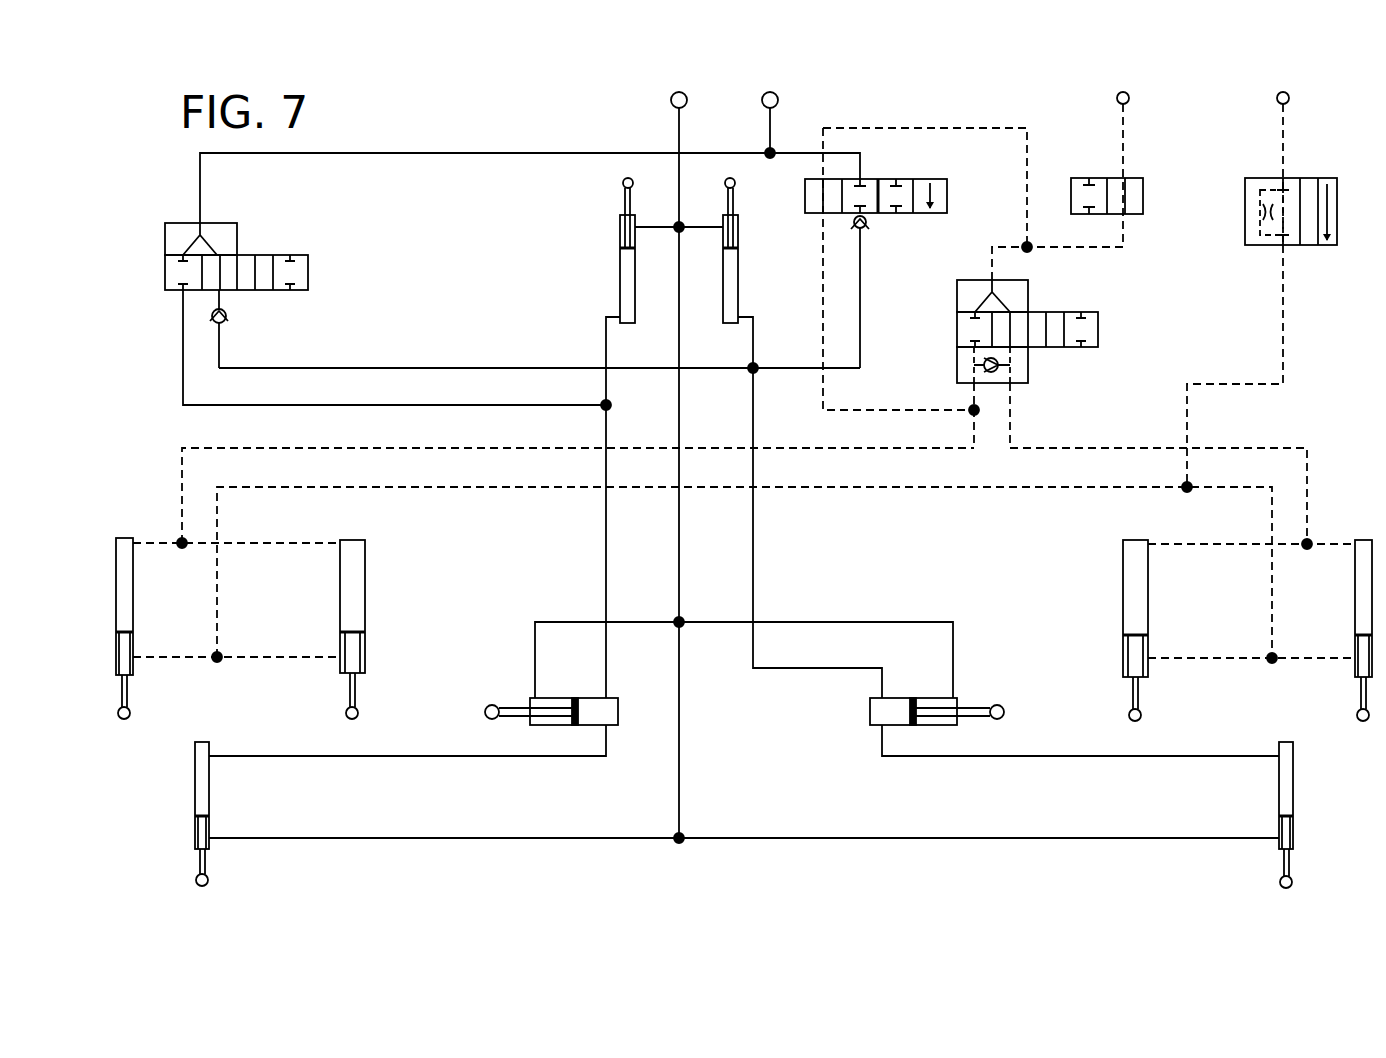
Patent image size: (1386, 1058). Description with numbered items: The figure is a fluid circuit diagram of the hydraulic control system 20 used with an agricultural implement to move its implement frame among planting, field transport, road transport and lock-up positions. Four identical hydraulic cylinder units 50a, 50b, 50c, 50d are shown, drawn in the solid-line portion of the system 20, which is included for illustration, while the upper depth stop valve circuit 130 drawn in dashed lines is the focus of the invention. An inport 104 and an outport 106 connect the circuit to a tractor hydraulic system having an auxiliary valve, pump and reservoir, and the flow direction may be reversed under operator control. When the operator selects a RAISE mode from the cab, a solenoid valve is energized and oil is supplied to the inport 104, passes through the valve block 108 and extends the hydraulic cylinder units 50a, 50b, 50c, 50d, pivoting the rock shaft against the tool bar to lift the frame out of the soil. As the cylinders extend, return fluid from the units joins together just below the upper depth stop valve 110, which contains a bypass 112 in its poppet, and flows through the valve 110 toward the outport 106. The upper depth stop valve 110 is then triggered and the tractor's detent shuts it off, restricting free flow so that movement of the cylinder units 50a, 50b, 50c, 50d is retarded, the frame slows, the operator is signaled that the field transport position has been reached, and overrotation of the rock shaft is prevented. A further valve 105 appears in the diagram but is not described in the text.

The hydraulic control system 20 is at (533, 113).
The hydraulic cylinder unit 50a is at (1355, 572).
The hydraulic cylinder unit 50b is at (1123, 595).
The hydraulic cylinder unit 50c is at (365, 560).
The hydraulic cylinder unit 50d is at (116, 570).
The inport 104 is at (1117, 96).
The pilot operated valve 105 is at (1028, 312).
The outport 106 is at (1289, 94).
The valve block 108 is at (1132, 178).
The upper depth stop valve 110 is at (1337, 215).
The bypass 112 is at (1266, 188).
The upper depth stop valve circuit 130 is at (1276, 342).